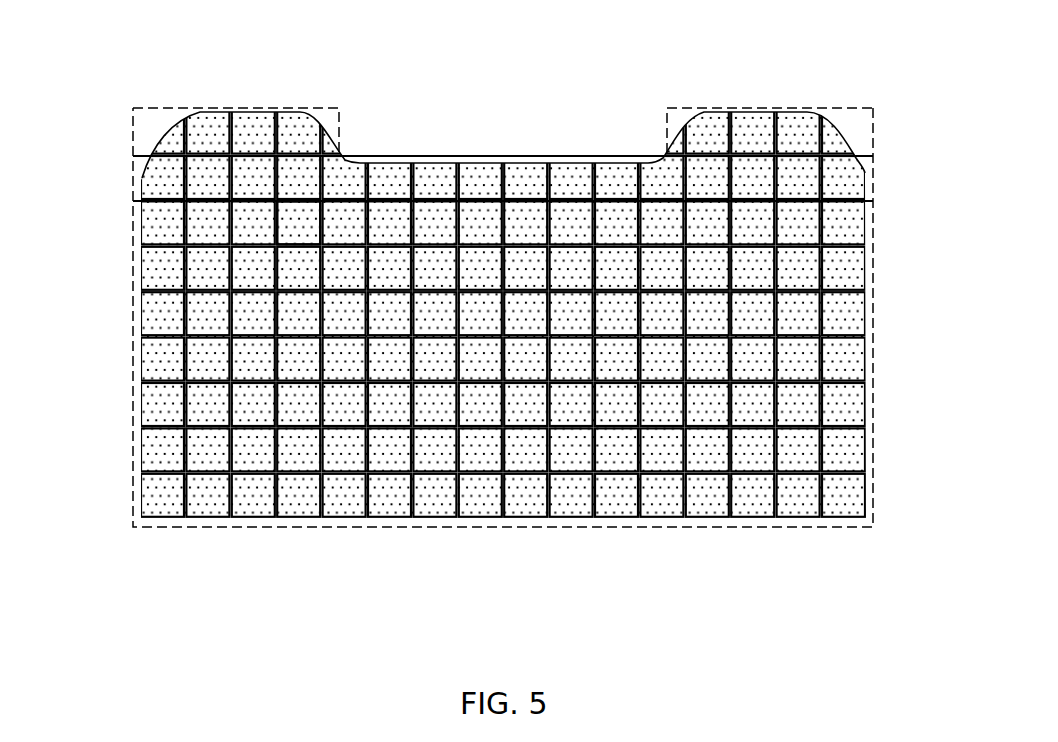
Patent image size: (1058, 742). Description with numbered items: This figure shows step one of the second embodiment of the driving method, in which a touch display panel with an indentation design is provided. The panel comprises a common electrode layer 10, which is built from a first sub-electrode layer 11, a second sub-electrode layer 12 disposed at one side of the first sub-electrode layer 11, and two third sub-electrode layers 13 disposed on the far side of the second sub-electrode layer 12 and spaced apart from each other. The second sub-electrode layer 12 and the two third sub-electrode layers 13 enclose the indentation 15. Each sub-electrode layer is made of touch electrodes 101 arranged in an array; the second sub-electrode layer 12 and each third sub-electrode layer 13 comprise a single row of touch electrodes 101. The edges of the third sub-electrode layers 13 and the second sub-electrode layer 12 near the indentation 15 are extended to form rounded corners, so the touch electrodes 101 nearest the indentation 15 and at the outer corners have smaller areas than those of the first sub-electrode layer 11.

The common electrode layer 10 is at (489, 270).
The first sub-electrode layer 11 is at (873, 378).
The second sub-electrode layer 12 is at (873, 178).
The third sub-electrode layer 13 is at (873, 126).
The indentation 15 is at (487, 133).
The touch electrode 101 is at (302, 223).